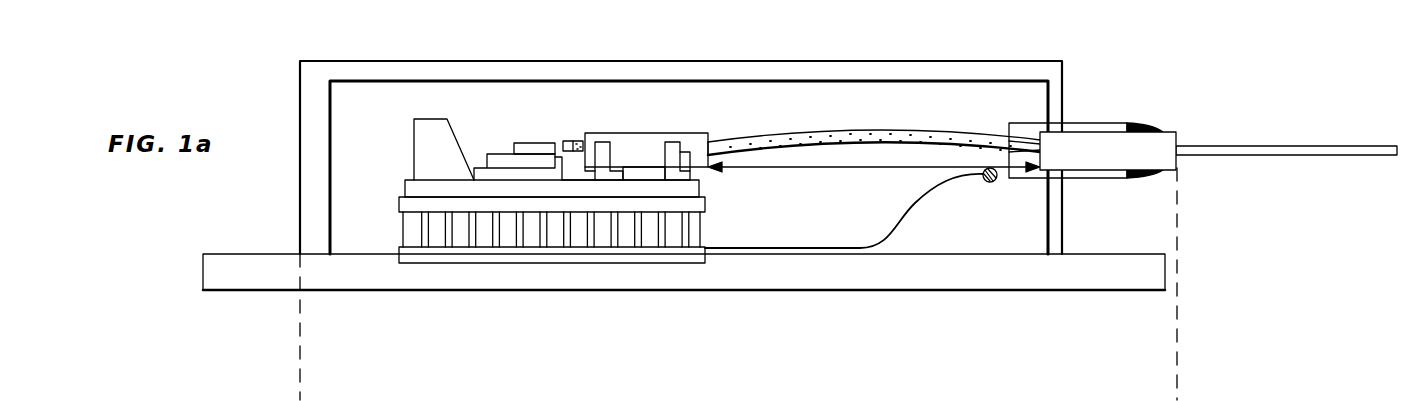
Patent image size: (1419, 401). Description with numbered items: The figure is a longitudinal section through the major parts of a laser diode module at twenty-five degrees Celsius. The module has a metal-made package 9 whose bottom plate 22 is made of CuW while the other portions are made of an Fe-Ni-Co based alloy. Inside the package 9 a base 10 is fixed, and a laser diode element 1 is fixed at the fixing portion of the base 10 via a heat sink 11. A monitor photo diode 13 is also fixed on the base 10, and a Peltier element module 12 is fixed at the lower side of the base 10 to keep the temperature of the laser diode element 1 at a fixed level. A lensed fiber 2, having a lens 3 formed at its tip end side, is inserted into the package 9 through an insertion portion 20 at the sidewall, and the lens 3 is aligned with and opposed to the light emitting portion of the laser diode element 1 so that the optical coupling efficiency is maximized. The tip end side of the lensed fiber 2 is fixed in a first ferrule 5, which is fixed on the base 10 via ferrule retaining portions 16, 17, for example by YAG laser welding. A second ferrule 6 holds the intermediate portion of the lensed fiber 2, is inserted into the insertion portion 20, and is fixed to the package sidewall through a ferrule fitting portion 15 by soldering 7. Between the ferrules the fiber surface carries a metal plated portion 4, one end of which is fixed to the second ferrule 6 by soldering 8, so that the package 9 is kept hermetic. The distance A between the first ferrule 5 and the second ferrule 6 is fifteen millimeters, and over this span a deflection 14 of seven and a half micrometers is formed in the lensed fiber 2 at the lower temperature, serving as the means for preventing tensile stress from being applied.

The package 9 is at (897, 72).
The bottom plate 22 is at (918, 270).
The Peltier element module 12 is at (598, 237).
The base 10 is at (410, 187).
The monitor photo diode 13 is at (446, 163).
The heat sink 11 is at (490, 154).
The laser diode element 1 is at (525, 143).
The lens 3 is at (568, 141).
The first ferrule 5 is at (645, 152).
The ferrule retaining portion 16 is at (601, 142).
The ferrule retaining portion 17 is at (680, 142).
The lensed fiber 2 is at (955, 140).
The metal plated portion 4 is at (742, 143).
The deflection 14 is at (847, 130).
The distance A is at (858, 169).
The soldering 8 is at (1038, 138).
The second ferrule 6 is at (1089, 143).
The insertion portion 20 is at (1057, 177).
The ferrule fitting portion 15 is at (1102, 176).
The soldering 7 is at (1150, 178).